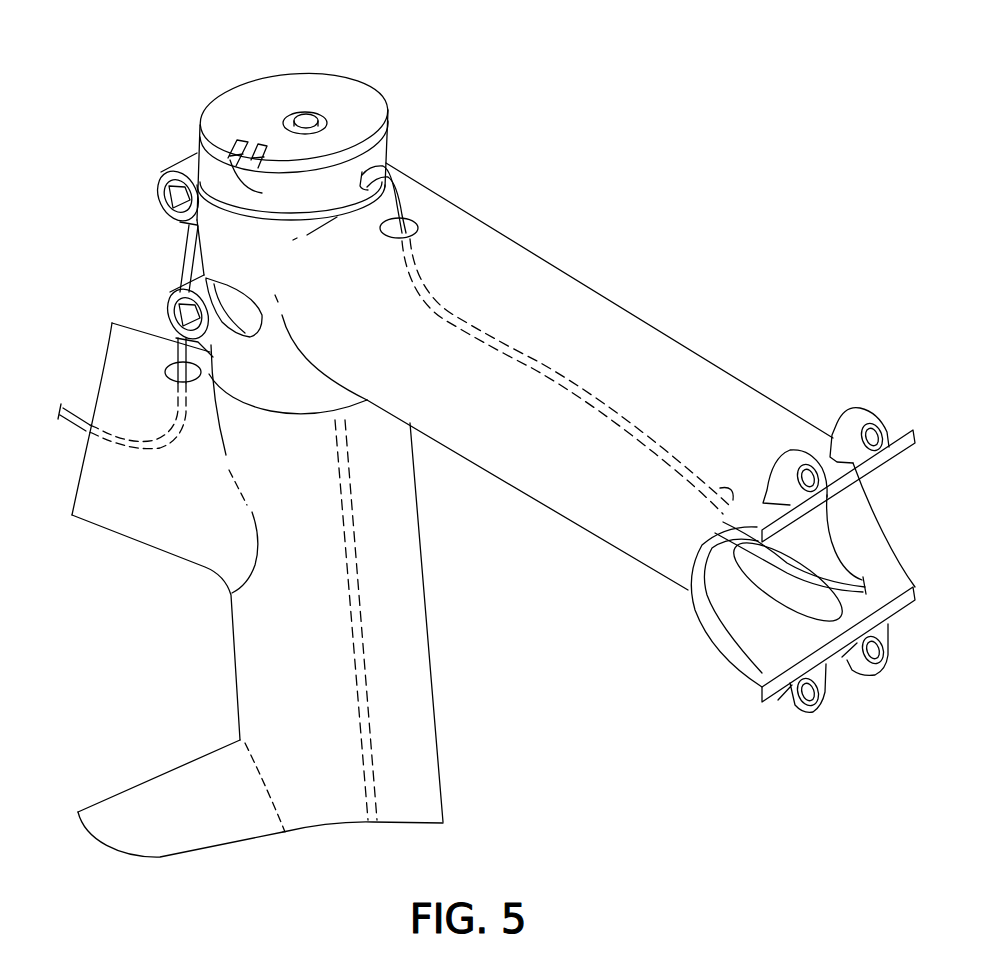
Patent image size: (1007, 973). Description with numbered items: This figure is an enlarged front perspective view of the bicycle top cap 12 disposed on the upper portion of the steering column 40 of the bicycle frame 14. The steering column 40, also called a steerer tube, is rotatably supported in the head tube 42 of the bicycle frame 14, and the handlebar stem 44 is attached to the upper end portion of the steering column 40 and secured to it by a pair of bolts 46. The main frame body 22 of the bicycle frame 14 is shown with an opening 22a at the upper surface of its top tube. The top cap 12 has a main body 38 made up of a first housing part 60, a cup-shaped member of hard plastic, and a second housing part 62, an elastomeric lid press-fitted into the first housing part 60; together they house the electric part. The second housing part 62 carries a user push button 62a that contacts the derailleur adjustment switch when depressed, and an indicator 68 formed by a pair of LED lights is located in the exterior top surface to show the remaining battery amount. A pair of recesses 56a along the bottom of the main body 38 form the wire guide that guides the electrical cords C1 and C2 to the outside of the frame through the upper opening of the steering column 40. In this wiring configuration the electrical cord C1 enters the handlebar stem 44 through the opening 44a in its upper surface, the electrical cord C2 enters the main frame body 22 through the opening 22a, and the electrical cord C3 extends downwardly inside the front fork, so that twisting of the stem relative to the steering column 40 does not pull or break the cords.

The bicycle top cap 12 is at (334, 66).
The bicycle frame 14 is at (134, 546).
The main frame body 22 is at (151, 782).
The opening 22a is at (170, 362).
The main body 38 is at (440, 53).
The steering column 40 is at (244, 310).
The head tube 42 is at (423, 579).
The handlebar stem 44 is at (694, 352).
The opening 44a is at (418, 221).
The bolts 46 is at (158, 185).
The recesses 56a is at (414, 172).
The first housing part 60 is at (383, 137).
The second housing part 62 is at (363, 88).
The user push button 62a is at (302, 118).
The indicator 68 is at (252, 190).
The electrical cord C1 is at (516, 354).
The electrical cord C2 is at (182, 257).
The electrical cord C3 is at (352, 648).